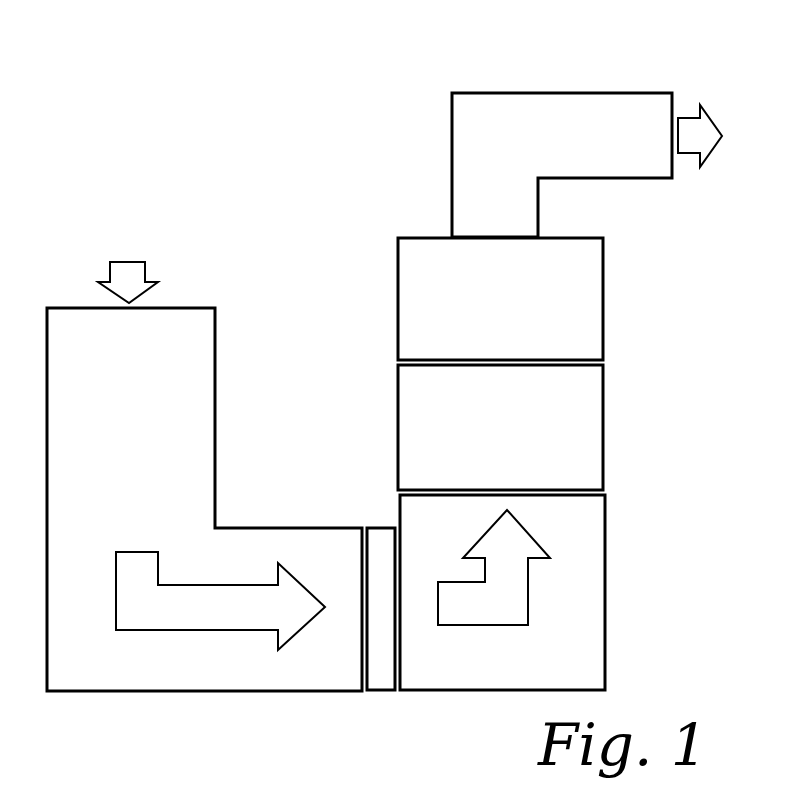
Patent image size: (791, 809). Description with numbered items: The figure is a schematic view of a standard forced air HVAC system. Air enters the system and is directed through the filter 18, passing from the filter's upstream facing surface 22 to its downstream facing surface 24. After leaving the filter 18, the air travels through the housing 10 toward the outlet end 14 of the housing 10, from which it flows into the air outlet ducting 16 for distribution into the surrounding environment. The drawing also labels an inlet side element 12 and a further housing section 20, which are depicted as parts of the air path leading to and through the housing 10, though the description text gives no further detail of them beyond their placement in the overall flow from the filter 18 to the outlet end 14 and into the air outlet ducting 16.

The housing 10 is at (250, 178).
The inlet housing 12 is at (172, 307).
The outlet end 14 is at (488, 237).
The air outlet ducting 16 is at (513, 110).
The filter 18 is at (384, 670).
The housing section 20 is at (575, 420).
The upstream facing surface 22 is at (367, 657).
The downstream facing surface 24 is at (400, 655).